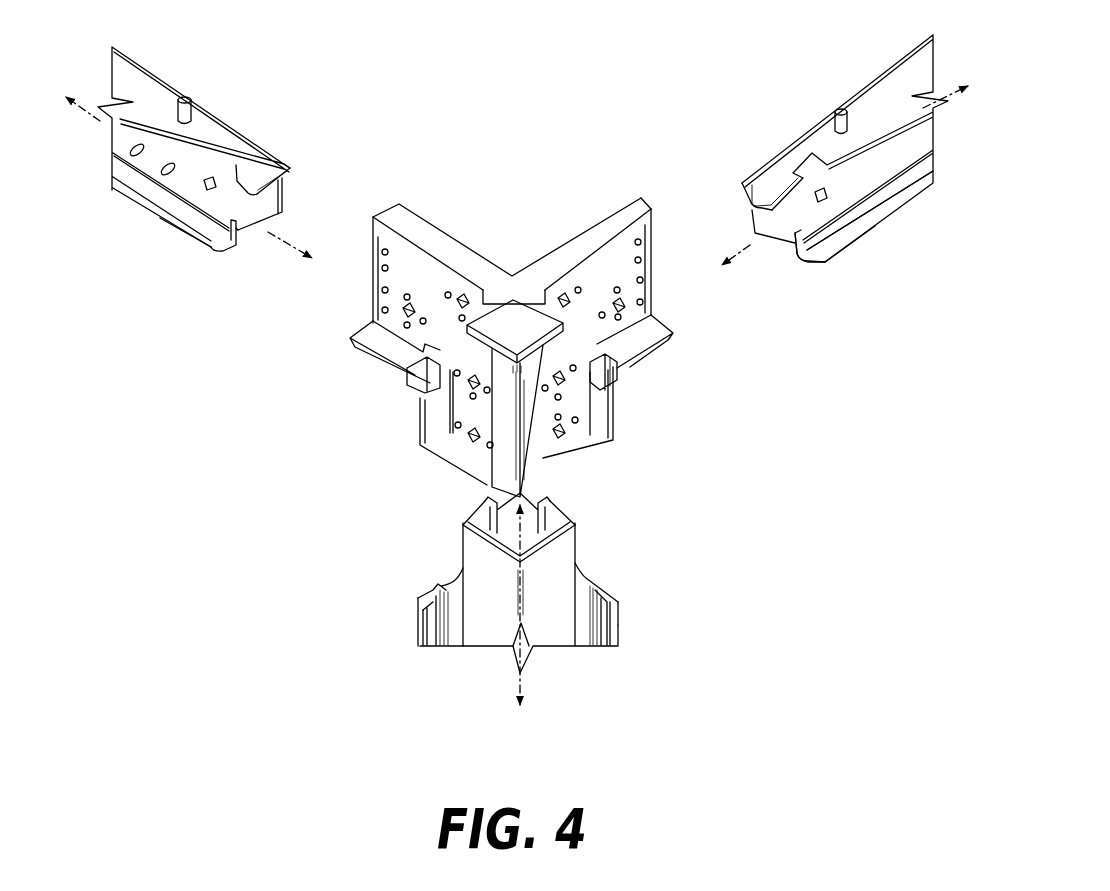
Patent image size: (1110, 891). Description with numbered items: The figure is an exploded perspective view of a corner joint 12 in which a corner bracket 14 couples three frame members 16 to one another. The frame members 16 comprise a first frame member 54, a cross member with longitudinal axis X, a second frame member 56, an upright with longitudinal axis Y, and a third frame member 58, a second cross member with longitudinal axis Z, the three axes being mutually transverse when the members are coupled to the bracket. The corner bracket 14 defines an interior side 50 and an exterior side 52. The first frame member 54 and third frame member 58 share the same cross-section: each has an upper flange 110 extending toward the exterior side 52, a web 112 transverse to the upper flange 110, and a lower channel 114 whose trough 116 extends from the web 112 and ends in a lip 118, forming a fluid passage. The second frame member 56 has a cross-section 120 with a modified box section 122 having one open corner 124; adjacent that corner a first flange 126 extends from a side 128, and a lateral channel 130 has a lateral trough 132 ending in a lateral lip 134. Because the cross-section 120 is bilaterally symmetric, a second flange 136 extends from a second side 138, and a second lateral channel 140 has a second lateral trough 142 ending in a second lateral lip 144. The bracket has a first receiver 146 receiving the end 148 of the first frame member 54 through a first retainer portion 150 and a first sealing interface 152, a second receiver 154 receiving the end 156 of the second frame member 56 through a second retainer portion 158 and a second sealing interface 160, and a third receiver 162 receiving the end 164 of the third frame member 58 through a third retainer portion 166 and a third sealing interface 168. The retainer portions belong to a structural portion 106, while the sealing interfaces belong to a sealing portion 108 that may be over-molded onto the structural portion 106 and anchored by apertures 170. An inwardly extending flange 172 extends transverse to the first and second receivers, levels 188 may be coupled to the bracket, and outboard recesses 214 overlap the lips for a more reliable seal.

The corner joint 12 is at (582, 145).
The corner bracket 14 is at (413, 207).
The frame members 16 is at (619, 637).
The interior side 50 is at (514, 274).
The exterior side 52 is at (393, 501).
The first frame member 54 is at (882, 218).
The second frame member 56 is at (620, 607).
The third frame member 58 is at (110, 190).
The structural portion 106 is at (574, 432).
The sealing portion 108 is at (545, 458).
The upper flange 110 is at (752, 177).
The web 112 is at (863, 153).
The lower channel 114 is at (805, 270).
The trough 116 is at (800, 250).
The lip 118 is at (847, 237).
The cross-section 120 is at (427, 531).
The modified box section 122 is at (576, 531).
The open corner 124 is at (552, 505).
The first flange 126 is at (598, 578).
The side 128 is at (619, 600).
The lateral channel 130 is at (600, 658).
The lateral trough 132 is at (604, 580).
The lateral lip 134 is at (620, 612).
The second flange 136 is at (466, 647).
The second side 138 is at (437, 592).
The second lateral channel 140 is at (432, 592).
The second lateral trough 142 is at (438, 630).
The second lateral lip 144 is at (440, 648).
The first receiver 146 is at (671, 305).
The end of the first frame member 148 is at (630, 204).
The first retainer portion 150 is at (607, 270).
The first sealing interface 152 is at (588, 310).
The second receiver 154 is at (475, 477).
The end of the second frame member 156 is at (589, 517).
The second retainer portion 158 is at (575, 397).
The second sealing interface 160 is at (614, 420).
The third receiver 162 is at (350, 287).
The end of the third frame member 164 is at (289, 203).
The third retainer portion 166 is at (416, 281).
The third sealing interface 168 is at (450, 318).
The apertures 170 is at (478, 412).
The inwardly extending flange 172 is at (537, 210).
The levels 188 is at (633, 357).
The outboard recesses 214 is at (614, 360).